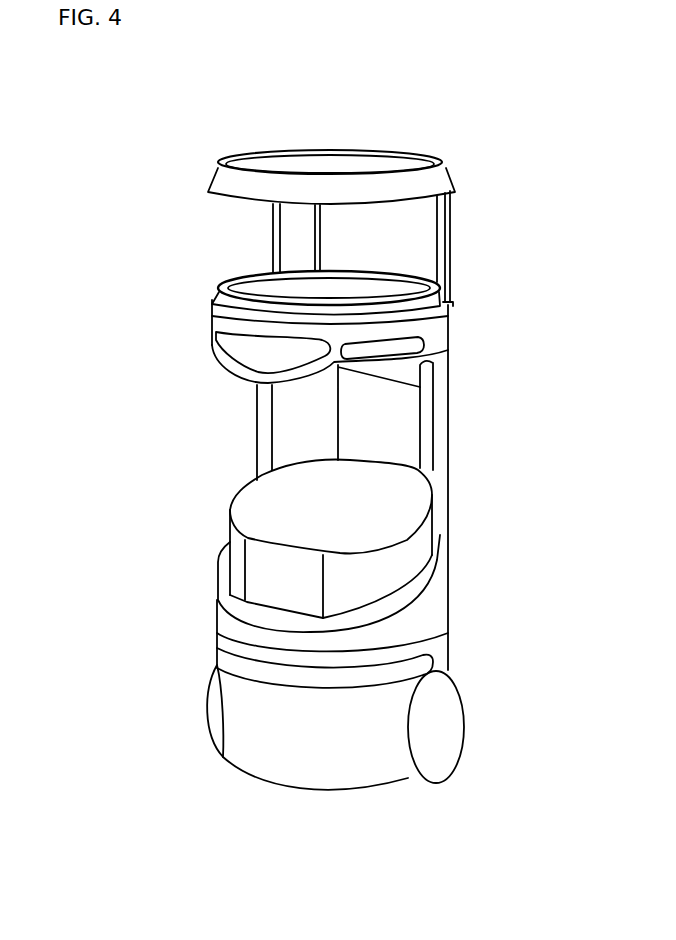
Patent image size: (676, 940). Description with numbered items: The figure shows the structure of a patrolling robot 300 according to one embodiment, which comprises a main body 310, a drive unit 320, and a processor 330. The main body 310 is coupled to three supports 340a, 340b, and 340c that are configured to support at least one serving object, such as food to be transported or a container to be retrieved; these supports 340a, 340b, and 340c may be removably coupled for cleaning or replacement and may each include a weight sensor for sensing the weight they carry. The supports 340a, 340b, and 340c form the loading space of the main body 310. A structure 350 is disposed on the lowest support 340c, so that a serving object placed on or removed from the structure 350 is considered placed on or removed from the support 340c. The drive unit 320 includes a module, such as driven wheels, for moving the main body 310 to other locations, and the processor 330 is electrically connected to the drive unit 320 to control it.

The patrolling robot 300 is at (118, 83).
The main body 310 is at (490, 177).
The support 340a is at (268, 165).
The support 340b is at (277, 297).
The support 340c is at (280, 612).
The structure 350 is at (260, 522).
The processor 330 is at (248, 707).
The drive unit 320 is at (252, 775).